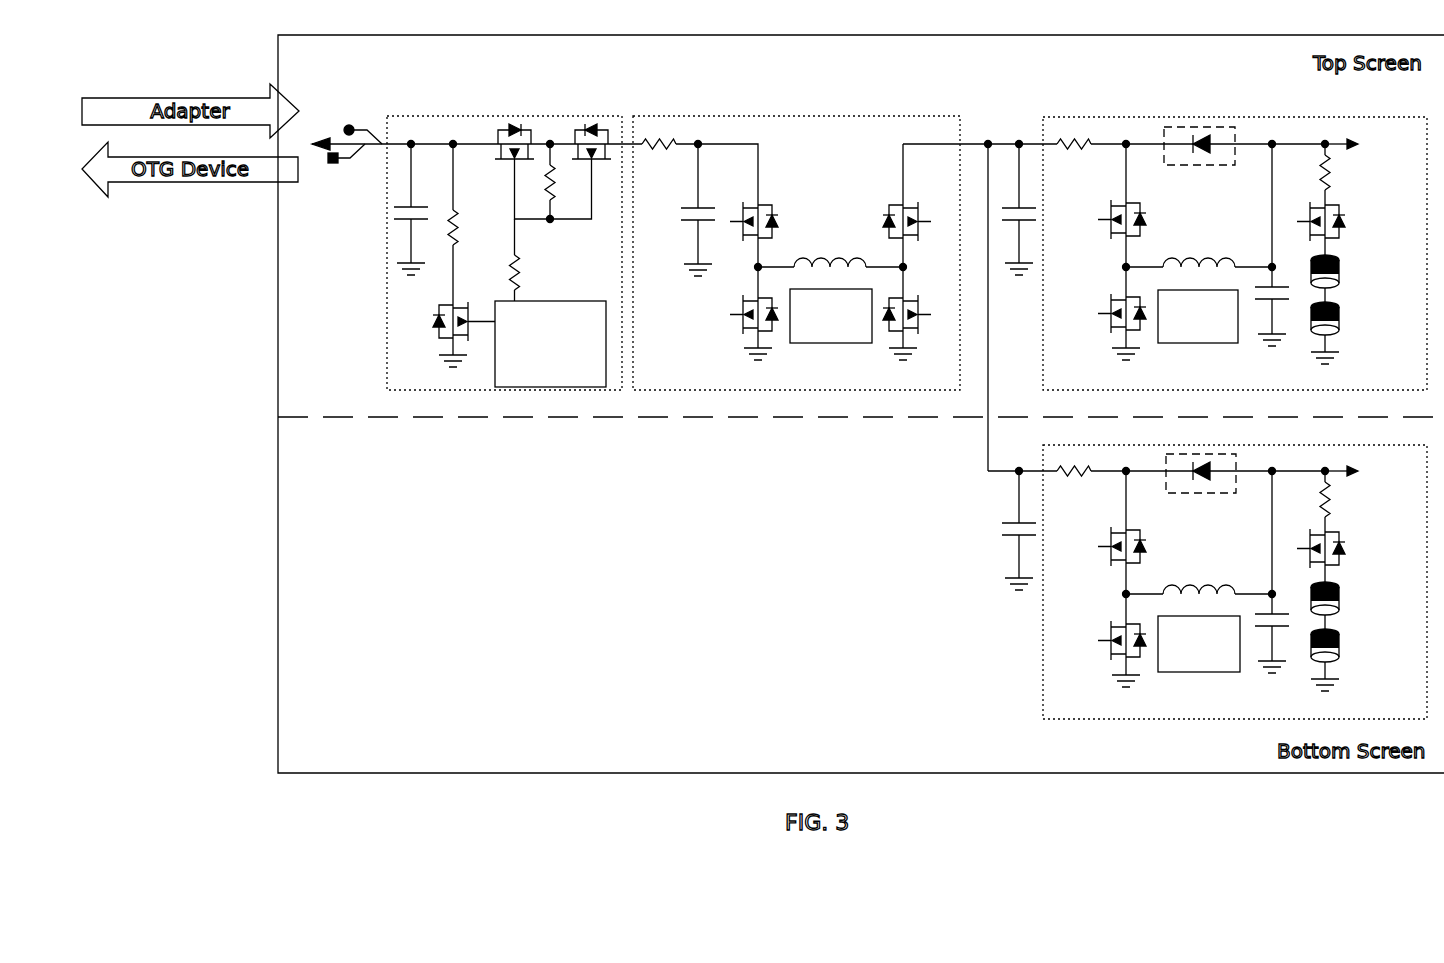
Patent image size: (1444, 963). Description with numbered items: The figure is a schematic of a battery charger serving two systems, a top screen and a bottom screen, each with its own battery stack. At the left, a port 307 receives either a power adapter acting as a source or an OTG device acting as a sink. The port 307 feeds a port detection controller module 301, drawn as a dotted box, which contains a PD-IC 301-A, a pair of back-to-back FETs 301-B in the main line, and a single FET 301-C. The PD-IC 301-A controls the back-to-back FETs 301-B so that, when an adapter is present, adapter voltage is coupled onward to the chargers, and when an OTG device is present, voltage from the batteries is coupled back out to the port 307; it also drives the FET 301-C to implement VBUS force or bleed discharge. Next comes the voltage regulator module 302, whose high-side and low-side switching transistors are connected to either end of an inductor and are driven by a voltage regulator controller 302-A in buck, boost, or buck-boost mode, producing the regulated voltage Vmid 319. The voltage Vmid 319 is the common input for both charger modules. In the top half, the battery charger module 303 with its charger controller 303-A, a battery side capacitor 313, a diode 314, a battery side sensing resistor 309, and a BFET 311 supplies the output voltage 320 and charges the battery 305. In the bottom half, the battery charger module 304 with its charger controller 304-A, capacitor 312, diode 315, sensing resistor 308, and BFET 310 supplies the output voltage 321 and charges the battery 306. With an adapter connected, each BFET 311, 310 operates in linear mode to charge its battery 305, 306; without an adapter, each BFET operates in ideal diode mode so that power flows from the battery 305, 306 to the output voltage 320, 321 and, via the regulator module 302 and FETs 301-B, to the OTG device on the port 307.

The port 307 is at (349, 130).
The port detection (PD) controller module 301 is at (514, 242).
The PD-IC 301-A is at (550, 303).
The back-to-back FETs 301-B is at (570, 197).
The FET 301-C is at (431, 255).
The voltage regulator module 302 is at (845, 242).
The voltage regulator controller 302-A is at (831, 316).
The voltage Vmid 319 is at (990, 294).
The capacitor 313 is at (1026, 197).
The capacitor 312 is at (1003, 529).
The battery charger module 303 is at (1235, 242).
The charger controller 303-A is at (1198, 316).
The diode 314 is at (1199, 159).
The output voltage 320 is at (1366, 148).
The battery side sensing resistor 309 is at (1350, 167).
The BFET 311 is at (1342, 215).
The battery 305 is at (1353, 301).
The battery charger module 304 is at (1235, 570).
The charger controller 304-A is at (1199, 644).
The diode 315 is at (1201, 487).
The output voltage 321 is at (1371, 476).
The battery side sensing resistor 308 is at (1352, 502).
The BFET 310 is at (1346, 547).
The battery 306 is at (1355, 628).